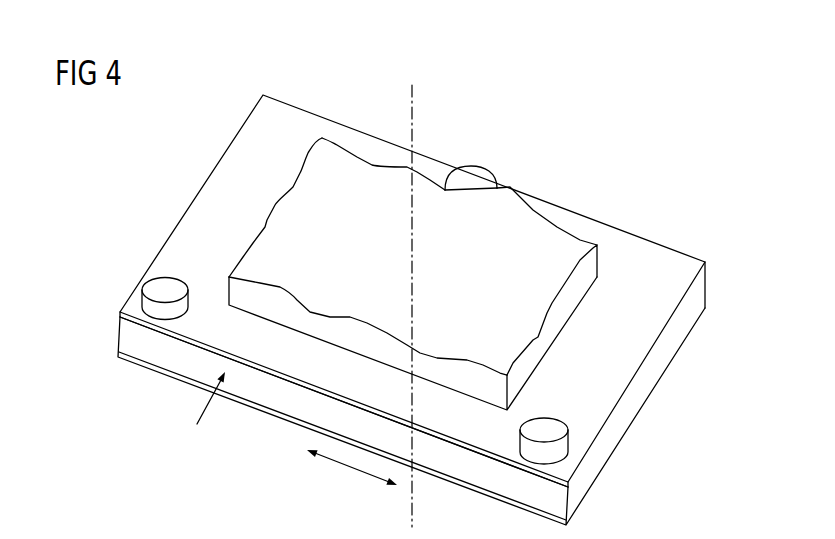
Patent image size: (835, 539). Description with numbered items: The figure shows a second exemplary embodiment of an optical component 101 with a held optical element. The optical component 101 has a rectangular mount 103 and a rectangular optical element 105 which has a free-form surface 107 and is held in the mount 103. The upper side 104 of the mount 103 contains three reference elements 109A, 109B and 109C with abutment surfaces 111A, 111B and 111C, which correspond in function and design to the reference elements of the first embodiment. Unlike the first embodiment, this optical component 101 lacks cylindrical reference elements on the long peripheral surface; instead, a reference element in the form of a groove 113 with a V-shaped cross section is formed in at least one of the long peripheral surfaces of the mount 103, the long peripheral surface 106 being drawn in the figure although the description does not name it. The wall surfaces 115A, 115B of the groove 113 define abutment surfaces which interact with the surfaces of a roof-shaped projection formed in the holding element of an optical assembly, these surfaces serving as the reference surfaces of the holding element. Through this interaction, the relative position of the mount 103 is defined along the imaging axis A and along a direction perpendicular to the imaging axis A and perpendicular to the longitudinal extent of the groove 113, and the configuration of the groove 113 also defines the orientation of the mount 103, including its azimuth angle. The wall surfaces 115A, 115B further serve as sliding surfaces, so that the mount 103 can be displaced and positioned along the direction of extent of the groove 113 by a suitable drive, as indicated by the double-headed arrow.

The imaging axis A is at (410, 97).
The optical component 101 is at (586, 126).
The mount 103 is at (673, 267).
The upper side of the mount 104 is at (662, 287).
The optical element 105 is at (452, 241).
The magnet body 106 is at (437, 416).
The free-form surface 107 is at (346, 175).
The reference element 109A is at (607, 464).
The reference element 109B is at (137, 251).
The reference element 109C is at (486, 138).
The abutment surface 111A is at (548, 431).
The abutment surface 111B is at (167, 286).
The abutment surface 111C is at (486, 182).
The groove 113 is at (203, 411).
The wall surface of the groove 115A is at (170, 348).
The wall surface of the groove 115B is at (297, 405).